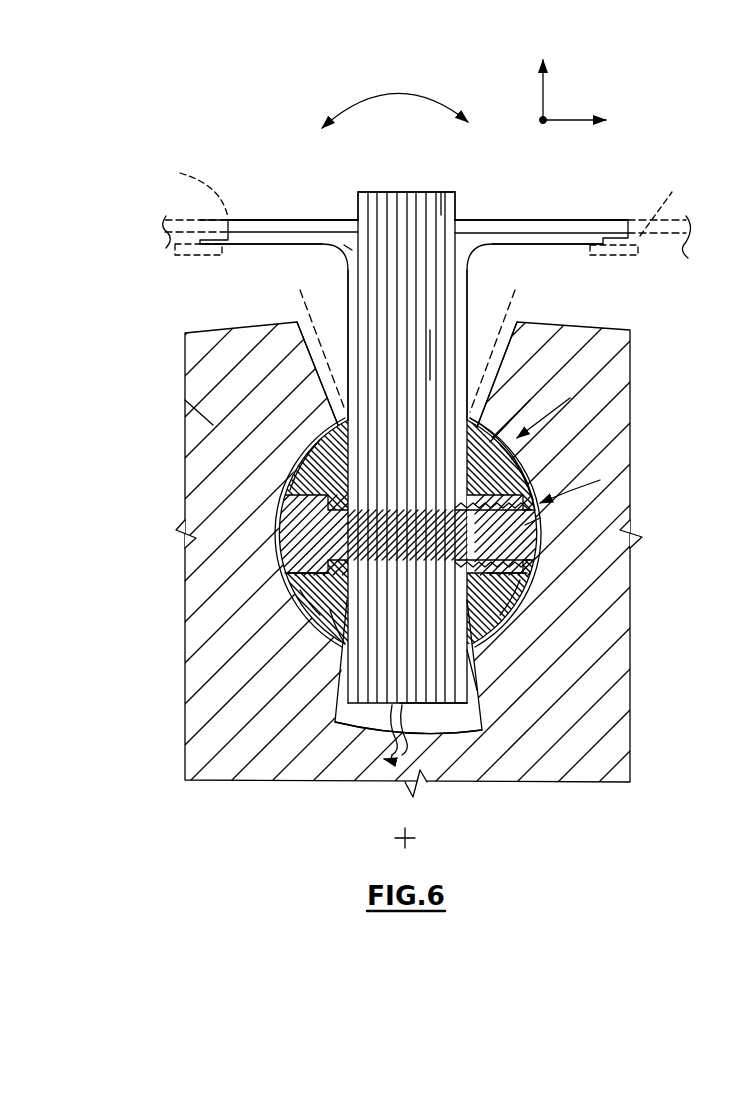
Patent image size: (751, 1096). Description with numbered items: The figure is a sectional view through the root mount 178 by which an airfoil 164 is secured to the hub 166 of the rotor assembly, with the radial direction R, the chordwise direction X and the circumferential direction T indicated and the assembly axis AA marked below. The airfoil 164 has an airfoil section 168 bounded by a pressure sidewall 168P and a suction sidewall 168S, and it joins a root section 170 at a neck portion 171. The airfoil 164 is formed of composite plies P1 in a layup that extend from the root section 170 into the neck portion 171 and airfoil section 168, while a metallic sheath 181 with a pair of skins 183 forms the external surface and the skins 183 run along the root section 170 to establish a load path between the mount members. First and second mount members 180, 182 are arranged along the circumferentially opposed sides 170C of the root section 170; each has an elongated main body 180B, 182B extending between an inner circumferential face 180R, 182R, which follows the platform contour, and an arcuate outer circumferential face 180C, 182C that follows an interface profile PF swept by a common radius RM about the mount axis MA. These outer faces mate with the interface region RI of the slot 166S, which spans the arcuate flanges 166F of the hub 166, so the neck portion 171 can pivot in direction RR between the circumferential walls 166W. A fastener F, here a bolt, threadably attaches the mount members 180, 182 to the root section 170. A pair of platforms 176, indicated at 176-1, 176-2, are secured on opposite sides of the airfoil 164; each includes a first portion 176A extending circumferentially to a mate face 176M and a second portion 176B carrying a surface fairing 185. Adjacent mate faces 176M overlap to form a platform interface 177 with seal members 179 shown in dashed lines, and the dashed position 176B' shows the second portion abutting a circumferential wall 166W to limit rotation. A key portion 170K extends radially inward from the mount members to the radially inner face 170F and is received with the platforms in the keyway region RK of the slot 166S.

The airfoil 164 is at (375, 189).
The hub 166 is at (182, 376).
The arcuate flange 166F is at (213, 425).
The circumferential wall 166W is at (314, 362).
The slot 166S is at (320, 620).
The airfoil section 168 is at (395, 197).
The pressure sidewall 168P is at (356, 199).
The suction sidewall 168S is at (430, 211).
The root section 170 is at (489, 600).
The circumferentially opposed side 170C is at (344, 686).
The key portion 170K is at (440, 685).
The radially inner face 170F is at (457, 705).
The neck portion 171 is at (429, 356).
The platform 176 is at (158, 243).
The first platform 176-1 is at (354, 208).
The second platform 176-2 is at (529, 207).
The first portion 176A is at (299, 240).
The second portion 176B is at (387, 334).
The second portion in rotated position 176B' is at (415, 350).
The mate face 176M is at (190, 217).
The platform interface 177 is at (212, 168).
The root mount 178 is at (518, 463).
The seal member 179 is at (194, 258).
The first mount member 180 is at (332, 455).
The main body of first mount member 180B is at (317, 584).
The outer circumferential face of first mount member 180C is at (300, 455).
The inner circumferential face of first mount member 180R is at (313, 603).
The metallic sheath 181 is at (356, 215).
The second mount member 182 is at (501, 473).
The main body of second mount member 182B is at (541, 600).
The outer circumferential face of second mount member 182C is at (539, 464).
The inner circumferential face of second mount member 182R is at (509, 587).
The skin 183 is at (443, 210).
The surface fairing 185 is at (179, 218).
The pivot direction RR is at (408, 96).
The radial direction R is at (554, 82).
The circumferential direction T is at (584, 124).
The chordwise direction X is at (541, 121).
The interface profile PF is at (431, 390).
The interface region RI is at (599, 480).
The fastener F is at (526, 525).
The common radius RM is at (462, 525).
The mount axis MA is at (478, 548).
The keyway region RK is at (485, 664).
The plies P1 is at (388, 754).
The assembly axis AA is at (409, 841).